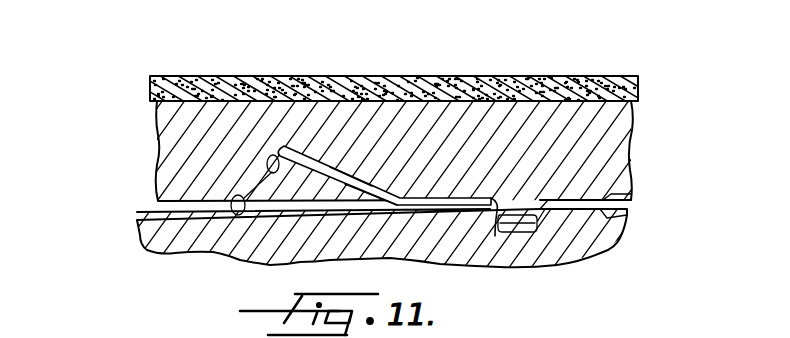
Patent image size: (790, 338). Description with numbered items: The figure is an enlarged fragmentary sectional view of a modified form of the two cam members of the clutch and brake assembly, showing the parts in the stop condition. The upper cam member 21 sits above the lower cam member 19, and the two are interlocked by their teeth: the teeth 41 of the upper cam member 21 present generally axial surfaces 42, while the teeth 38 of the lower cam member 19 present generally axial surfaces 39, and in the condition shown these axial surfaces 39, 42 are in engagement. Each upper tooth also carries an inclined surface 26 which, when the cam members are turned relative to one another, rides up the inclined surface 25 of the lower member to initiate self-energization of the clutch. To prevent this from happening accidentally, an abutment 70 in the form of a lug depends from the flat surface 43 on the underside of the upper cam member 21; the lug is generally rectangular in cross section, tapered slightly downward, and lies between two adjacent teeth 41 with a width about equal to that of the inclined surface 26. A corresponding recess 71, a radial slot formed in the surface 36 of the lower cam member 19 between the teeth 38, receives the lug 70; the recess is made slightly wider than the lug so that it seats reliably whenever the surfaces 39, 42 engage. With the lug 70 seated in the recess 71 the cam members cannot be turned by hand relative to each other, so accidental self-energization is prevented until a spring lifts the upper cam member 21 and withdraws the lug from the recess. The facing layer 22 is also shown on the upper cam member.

The top facing layer 22 is at (208, 77).
The upper cam member 21 is at (157, 133).
The lower cam member 19 is at (170, 253).
The inclined surface 25 is at (318, 155).
The teeth 38 is at (352, 170).
The teeth 41 is at (368, 204).
The generally axial surface 42 is at (275, 158).
The inclined surface 26 is at (345, 188).
The generally axial surface 39 is at (238, 215).
The surface 36 is at (629, 198).
The flat surface 43 is at (585, 205).
The abutment 70 is at (536, 232).
The recess 71 is at (496, 212).